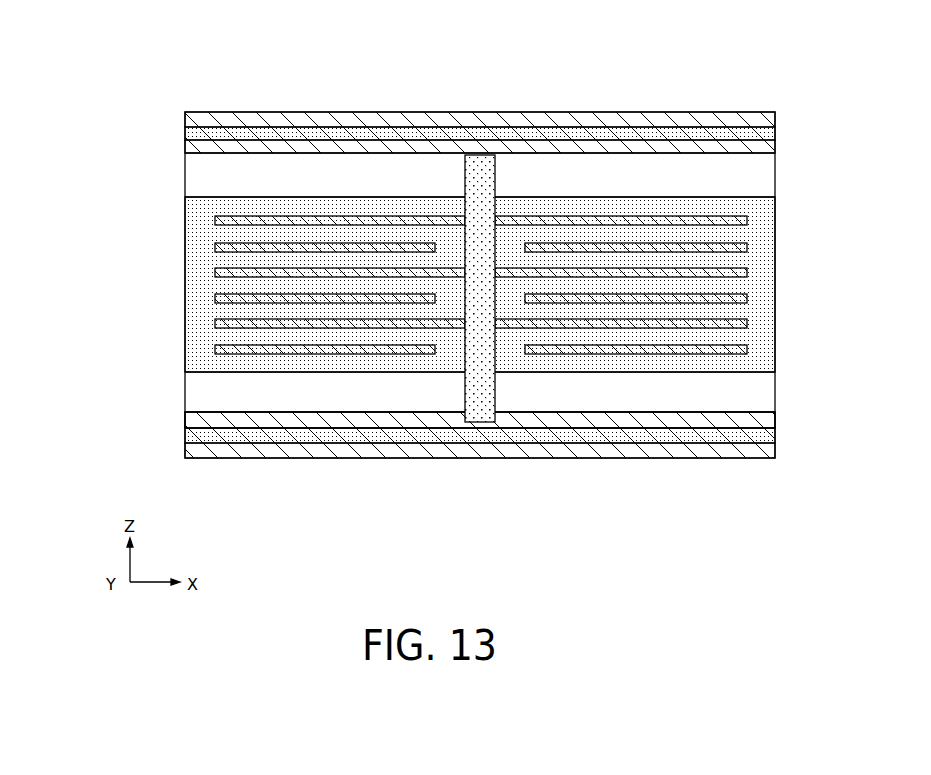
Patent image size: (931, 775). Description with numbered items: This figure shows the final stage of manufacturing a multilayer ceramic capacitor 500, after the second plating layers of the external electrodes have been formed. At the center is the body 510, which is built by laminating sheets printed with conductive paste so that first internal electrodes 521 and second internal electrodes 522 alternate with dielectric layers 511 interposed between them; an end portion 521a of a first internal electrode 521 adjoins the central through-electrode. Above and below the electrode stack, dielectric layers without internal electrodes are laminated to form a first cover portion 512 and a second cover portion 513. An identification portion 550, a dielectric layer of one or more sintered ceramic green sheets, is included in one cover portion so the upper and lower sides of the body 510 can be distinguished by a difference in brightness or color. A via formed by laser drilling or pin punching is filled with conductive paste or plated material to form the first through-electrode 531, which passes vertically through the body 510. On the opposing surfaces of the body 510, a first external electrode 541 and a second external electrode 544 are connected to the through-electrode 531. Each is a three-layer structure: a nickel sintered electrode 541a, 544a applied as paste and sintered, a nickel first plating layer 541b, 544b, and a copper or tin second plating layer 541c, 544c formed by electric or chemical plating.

The multilayer capacitor 500 is at (327, 36).
The body 510 is at (480, 350).
The dielectric layer 511 is at (742, 312).
The first cover portion 512 is at (772, 387).
The second cover portion 513 is at (772, 172).
The first internal electrode 521 is at (289, 360).
The lead-out portion of first internal electrode 521a is at (453, 347).
The second internal electrode 522 is at (745, 352).
The first through-electrode 531 is at (478, 165).
The first external electrode 541 is at (411, 437).
The first electrode layer 541a is at (187, 421).
The second electrode layer 541b is at (187, 438).
The third electrode layer 541c is at (187, 452).
The second external electrode 544 is at (411, 130).
The first electrode layer 544a is at (187, 147).
The second electrode layer 544b is at (187, 133).
The third electrode layer 544c is at (187, 115).
The identification portion 550 is at (302, 418).